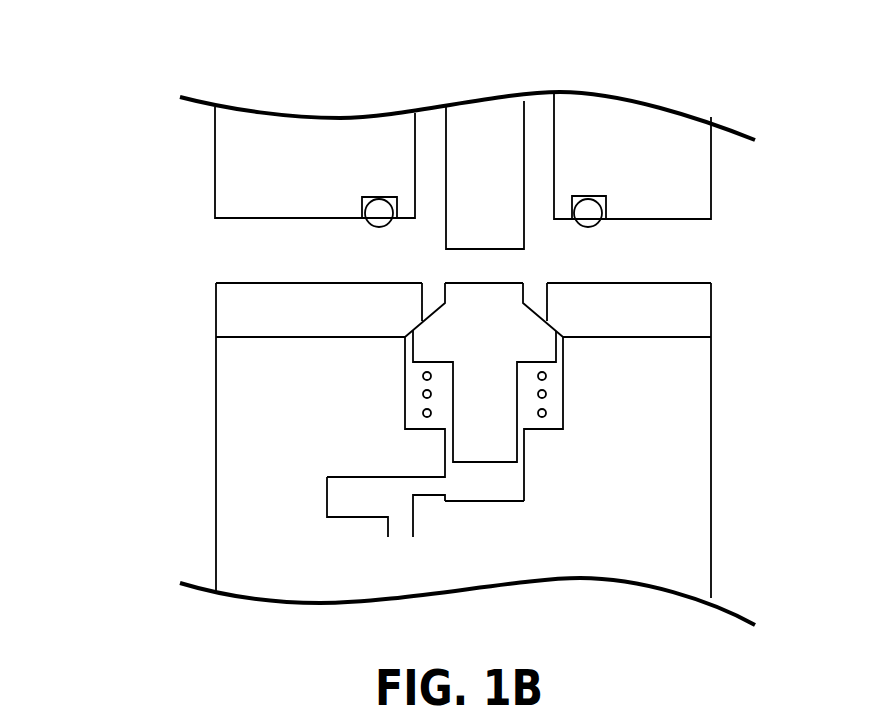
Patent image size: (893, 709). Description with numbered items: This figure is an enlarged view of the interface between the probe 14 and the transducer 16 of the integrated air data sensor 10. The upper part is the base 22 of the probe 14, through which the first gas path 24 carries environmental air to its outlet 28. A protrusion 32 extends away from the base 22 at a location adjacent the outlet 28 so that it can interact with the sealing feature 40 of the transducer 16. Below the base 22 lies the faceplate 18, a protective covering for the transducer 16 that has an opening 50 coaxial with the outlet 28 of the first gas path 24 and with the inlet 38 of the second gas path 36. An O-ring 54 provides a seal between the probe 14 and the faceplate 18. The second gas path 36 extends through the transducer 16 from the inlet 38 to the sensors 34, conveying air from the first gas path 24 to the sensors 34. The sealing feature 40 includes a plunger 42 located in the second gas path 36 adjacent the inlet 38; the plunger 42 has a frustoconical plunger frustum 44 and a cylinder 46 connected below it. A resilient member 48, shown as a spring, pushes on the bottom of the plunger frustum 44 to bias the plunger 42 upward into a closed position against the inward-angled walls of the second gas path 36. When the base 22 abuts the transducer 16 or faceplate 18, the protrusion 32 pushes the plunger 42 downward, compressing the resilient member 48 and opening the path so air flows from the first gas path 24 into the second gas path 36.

The integrated air data sensor 10 is at (114, 111).
The probe 14 is at (250, 86).
The transducer 16 is at (176, 465).
The faceplate 18 is at (176, 319).
The base 22 is at (352, 128).
The first gas path 24 is at (430, 137).
The outlet 28 is at (540, 198).
The protrusion 32 is at (475, 127).
The sensors 34 is at (337, 503).
The second gas path 36 is at (513, 478).
The inlet 38 is at (565, 347).
The sealing feature 40 is at (558, 395).
The plunger 42 is at (428, 350).
The plunger frustum 44 is at (503, 320).
The cylinder 46 is at (477, 450).
The resilient member 48 is at (422, 413).
The opening 50 is at (420, 302).
The O-ring 54 is at (380, 212).